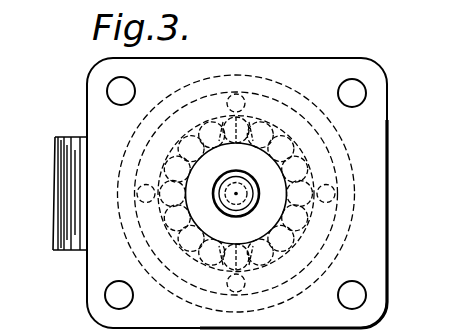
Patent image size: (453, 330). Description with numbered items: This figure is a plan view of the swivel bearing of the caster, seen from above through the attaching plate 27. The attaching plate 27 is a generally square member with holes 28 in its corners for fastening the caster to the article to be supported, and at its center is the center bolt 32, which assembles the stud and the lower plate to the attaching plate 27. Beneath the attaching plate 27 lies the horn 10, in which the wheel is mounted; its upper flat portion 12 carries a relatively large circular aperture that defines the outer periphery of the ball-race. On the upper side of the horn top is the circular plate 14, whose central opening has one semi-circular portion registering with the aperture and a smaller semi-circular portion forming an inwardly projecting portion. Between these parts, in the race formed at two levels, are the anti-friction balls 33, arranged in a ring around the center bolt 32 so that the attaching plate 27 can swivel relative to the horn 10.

The horn 10 is at (58, 158).
The upper flat portion 12 is at (300, 102).
The circular plate 14 is at (308, 127).
The attaching plate 27 is at (190, 65).
The holes 28 is at (107, 91).
The center bolt 32 is at (237, 209).
The anti-friction balls 33 is at (165, 218).